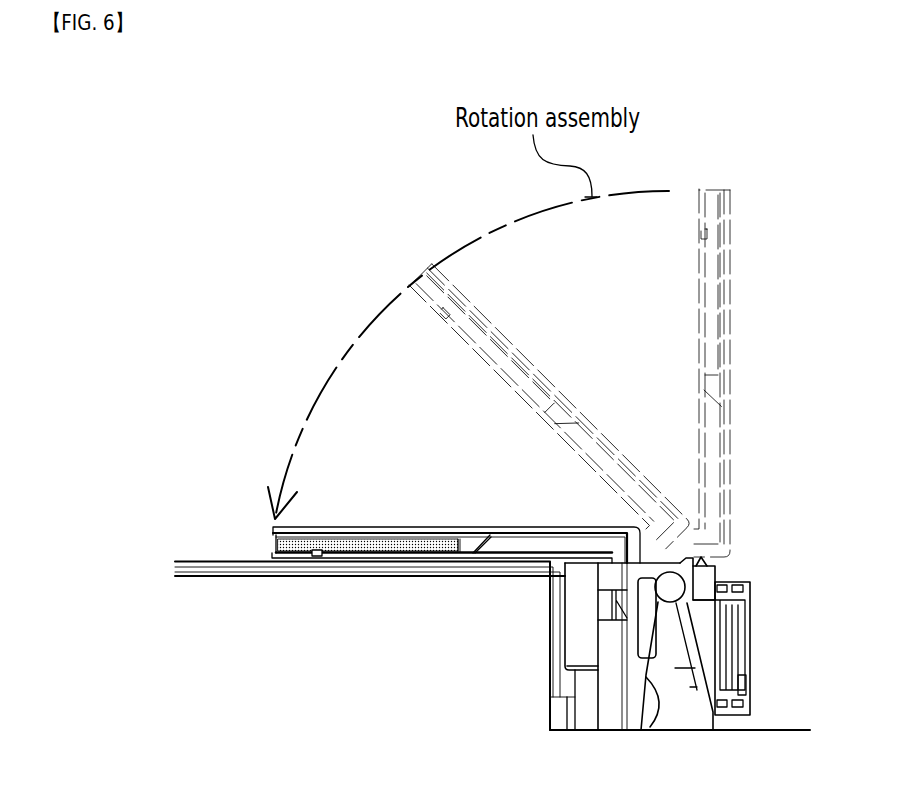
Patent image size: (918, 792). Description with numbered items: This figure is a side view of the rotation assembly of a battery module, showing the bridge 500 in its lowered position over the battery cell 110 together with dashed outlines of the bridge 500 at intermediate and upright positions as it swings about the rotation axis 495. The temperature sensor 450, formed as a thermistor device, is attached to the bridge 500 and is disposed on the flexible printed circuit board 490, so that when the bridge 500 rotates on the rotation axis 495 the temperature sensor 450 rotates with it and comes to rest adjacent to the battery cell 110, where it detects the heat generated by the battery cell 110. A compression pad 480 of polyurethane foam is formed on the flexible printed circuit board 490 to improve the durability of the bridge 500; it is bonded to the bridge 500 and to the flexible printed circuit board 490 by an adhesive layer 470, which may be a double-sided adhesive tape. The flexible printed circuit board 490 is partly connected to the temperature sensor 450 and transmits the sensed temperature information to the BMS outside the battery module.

The battery cell 110 is at (202, 561).
The bridge 500 is at (408, 520).
The temperature sensor 450 is at (317, 556).
The adhesive layer 470 is at (342, 554).
The compression pad 480 is at (400, 549).
The flexible printed circuit board 490 is at (490, 550).
The rotation axis 495 is at (668, 588).